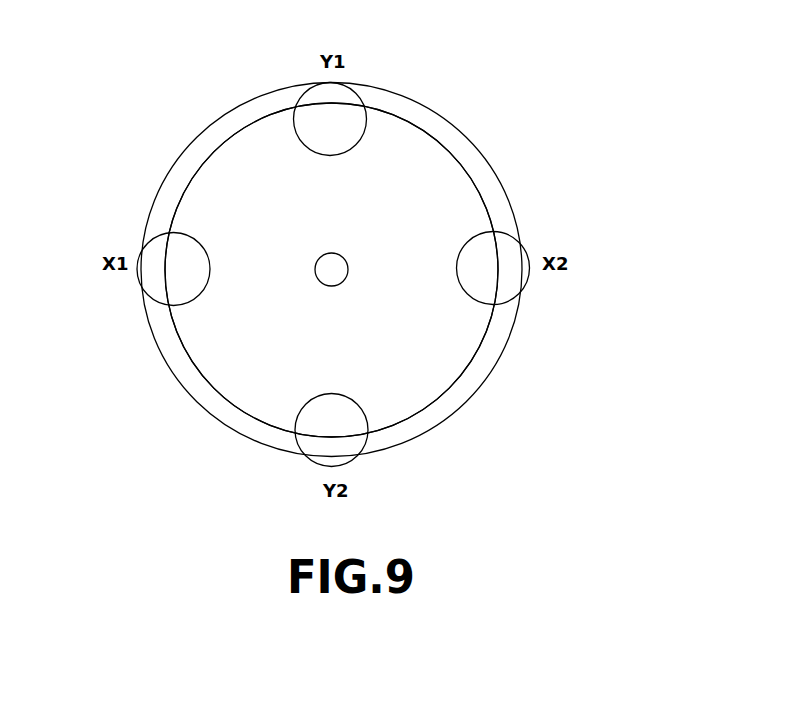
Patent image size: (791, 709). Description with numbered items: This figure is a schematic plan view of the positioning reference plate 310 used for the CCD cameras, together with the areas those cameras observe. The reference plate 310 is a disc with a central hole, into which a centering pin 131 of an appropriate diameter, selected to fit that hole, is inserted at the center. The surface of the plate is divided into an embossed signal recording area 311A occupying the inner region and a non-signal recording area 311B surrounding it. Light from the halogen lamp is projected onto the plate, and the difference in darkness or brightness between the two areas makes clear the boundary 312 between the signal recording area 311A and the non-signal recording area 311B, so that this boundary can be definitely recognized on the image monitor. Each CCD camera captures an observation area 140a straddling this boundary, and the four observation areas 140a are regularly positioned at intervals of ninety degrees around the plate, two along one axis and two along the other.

The positioning reference plate 310 is at (354, 275).
The embossed signal recording area 311A is at (400, 147).
The non-signal recording area 311B is at (488, 182).
The boundary 312 is at (457, 154).
The centering pin 131 is at (345, 257).
The observation area 140a is at (360, 88).